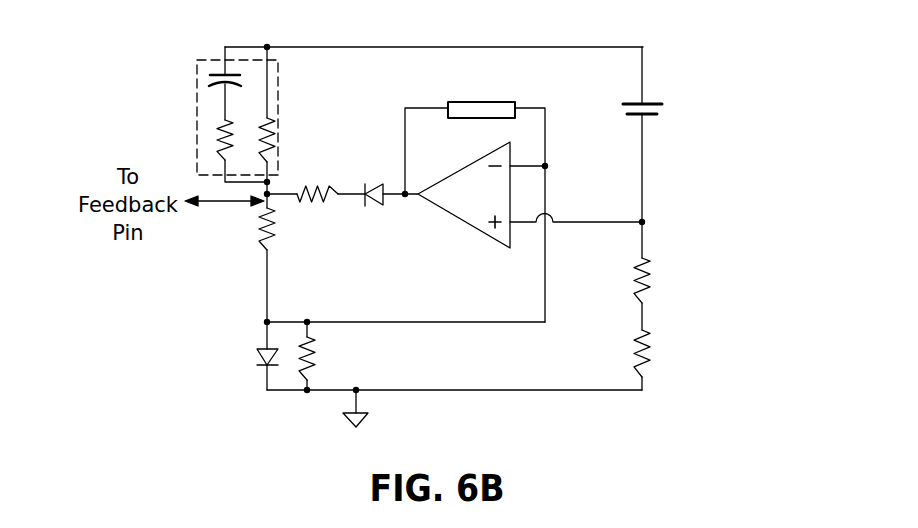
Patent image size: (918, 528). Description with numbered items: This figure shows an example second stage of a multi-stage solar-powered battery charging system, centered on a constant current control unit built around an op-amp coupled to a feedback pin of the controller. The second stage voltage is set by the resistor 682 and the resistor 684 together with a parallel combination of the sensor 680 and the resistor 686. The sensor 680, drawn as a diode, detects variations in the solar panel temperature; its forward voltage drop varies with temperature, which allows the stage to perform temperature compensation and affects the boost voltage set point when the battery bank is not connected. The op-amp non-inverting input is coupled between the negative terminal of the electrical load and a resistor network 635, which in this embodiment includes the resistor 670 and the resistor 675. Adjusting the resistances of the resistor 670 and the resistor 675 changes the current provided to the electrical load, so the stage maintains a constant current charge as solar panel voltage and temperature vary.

The resistor network 635 is at (707, 321).
The resistor 670 is at (649, 269).
The resistor 675 is at (636, 347).
The sensor 680 is at (257, 358).
The resistor 682 is at (271, 131).
The resistor 684 is at (262, 238).
The resistor 686 is at (315, 348).